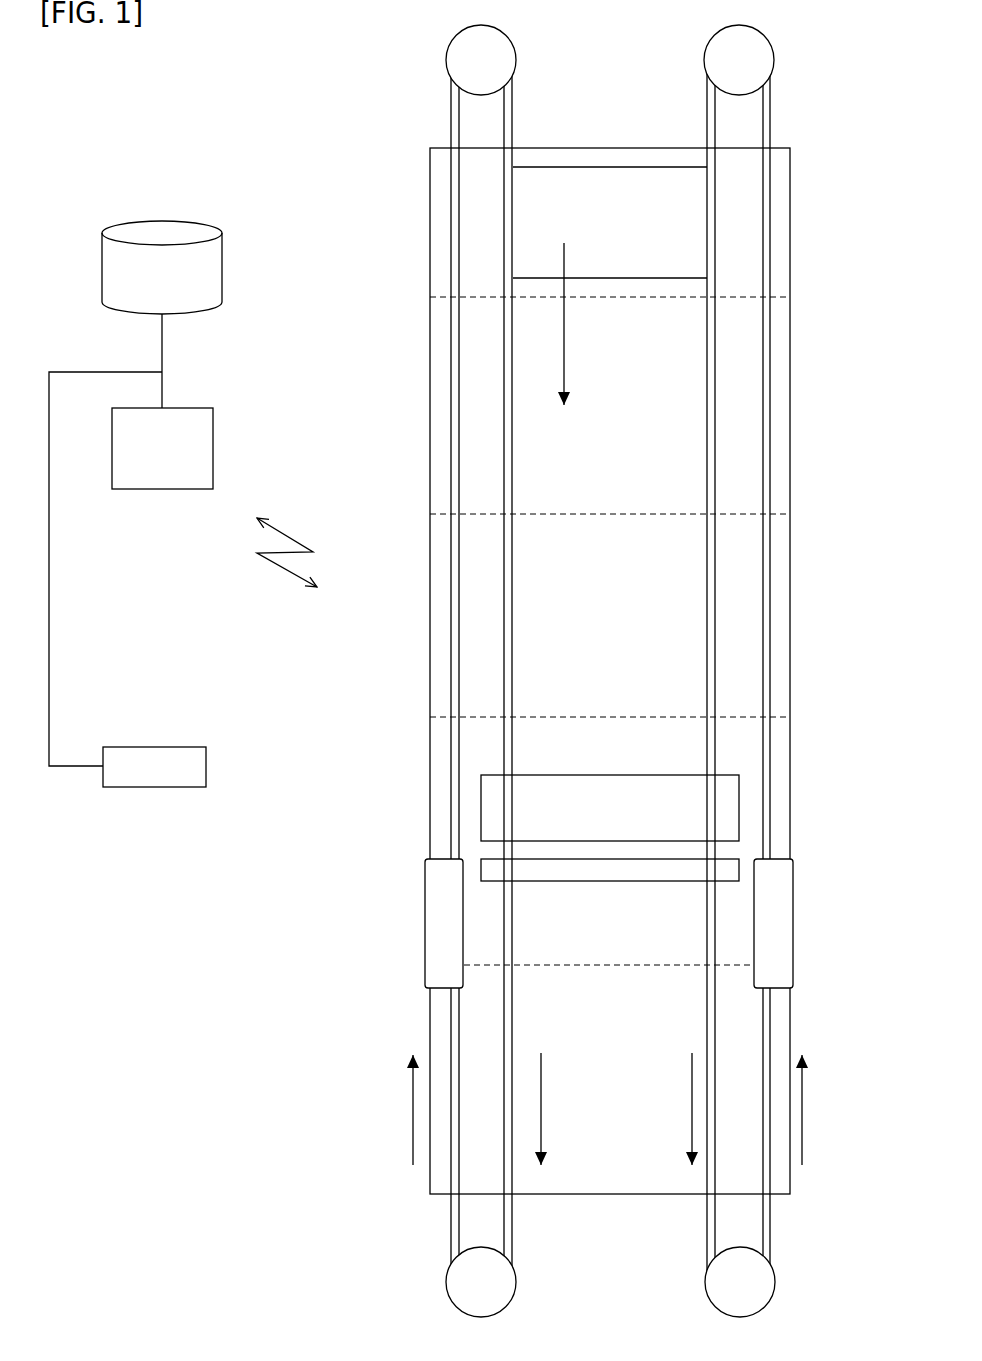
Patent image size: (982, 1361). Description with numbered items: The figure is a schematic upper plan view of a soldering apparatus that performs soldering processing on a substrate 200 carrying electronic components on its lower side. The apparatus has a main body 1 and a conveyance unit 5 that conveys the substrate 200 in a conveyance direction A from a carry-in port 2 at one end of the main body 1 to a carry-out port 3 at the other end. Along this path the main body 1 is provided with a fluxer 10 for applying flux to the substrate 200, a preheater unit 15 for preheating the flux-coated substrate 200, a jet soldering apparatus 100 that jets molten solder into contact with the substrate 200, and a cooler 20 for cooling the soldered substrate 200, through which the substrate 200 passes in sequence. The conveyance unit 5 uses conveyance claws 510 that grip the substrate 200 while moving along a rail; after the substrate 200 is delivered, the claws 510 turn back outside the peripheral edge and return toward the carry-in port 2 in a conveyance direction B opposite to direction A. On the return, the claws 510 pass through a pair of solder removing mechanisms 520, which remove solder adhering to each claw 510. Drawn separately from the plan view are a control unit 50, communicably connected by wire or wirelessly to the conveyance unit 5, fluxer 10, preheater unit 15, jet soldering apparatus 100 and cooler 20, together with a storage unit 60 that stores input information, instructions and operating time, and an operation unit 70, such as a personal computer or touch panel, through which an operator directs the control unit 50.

The main body 1 is at (813, 428).
The carry-in port 2 is at (611, 115).
The carry-out port 3 is at (591, 1244).
The conveyance unit 5 is at (418, 128).
The fluxer 10 is at (790, 345).
The preheater unit 15 is at (790, 598).
The cooler 20 is at (790, 1040).
The control unit 50 is at (214, 452).
The storage unit 60 is at (222, 268).
The operation unit 70 is at (207, 765).
The jet soldering apparatus 100 is at (790, 833).
The substrate 200 is at (692, 217).
The conveyance claws 510 is at (770, 130).
The solder removing mechanism 520 is at (787, 905).